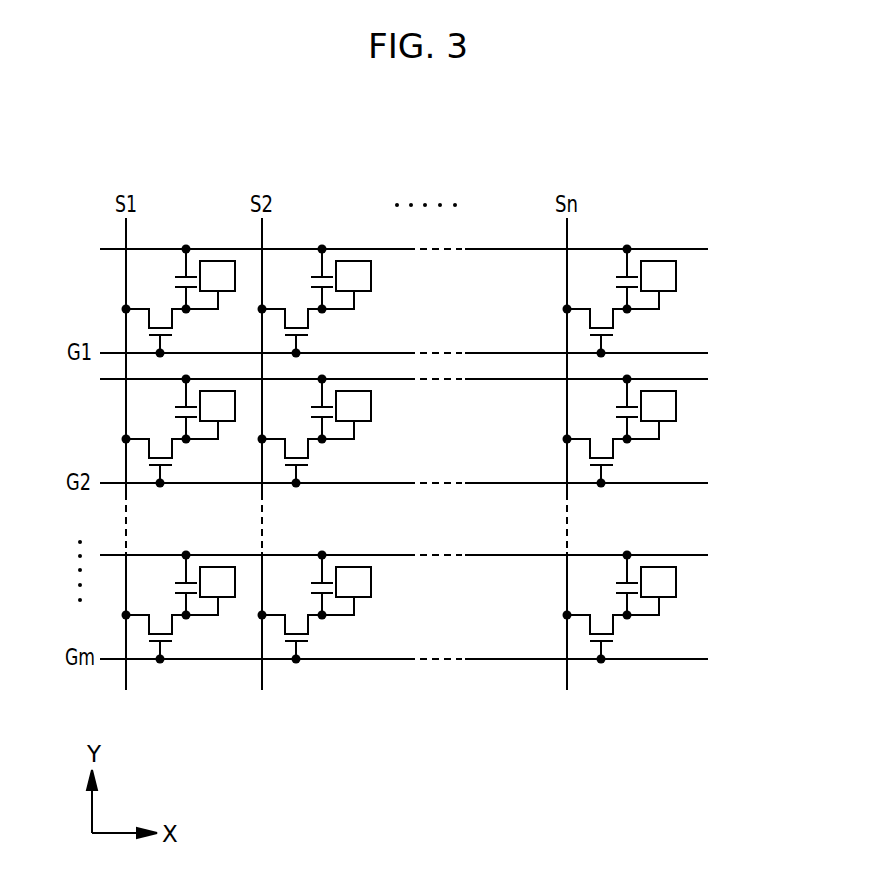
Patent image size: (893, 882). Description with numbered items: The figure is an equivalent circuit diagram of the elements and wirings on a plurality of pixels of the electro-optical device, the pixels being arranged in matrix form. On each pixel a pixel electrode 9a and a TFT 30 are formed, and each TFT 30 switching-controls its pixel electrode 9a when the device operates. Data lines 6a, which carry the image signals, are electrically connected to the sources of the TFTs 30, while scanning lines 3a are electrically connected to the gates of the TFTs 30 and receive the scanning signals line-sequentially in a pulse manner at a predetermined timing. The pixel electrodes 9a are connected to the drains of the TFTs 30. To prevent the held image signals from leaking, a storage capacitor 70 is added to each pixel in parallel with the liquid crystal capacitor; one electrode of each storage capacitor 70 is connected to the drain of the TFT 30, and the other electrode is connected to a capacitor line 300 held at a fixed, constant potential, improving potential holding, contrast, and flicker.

The data line 6a is at (607, 212).
The capacitor line 300 is at (733, 573).
The scanning line 3a is at (753, 659).
The storage capacitor 70 is at (173, 285).
The pixel electrode 9a is at (702, 611).
The TFT 30 is at (143, 323).